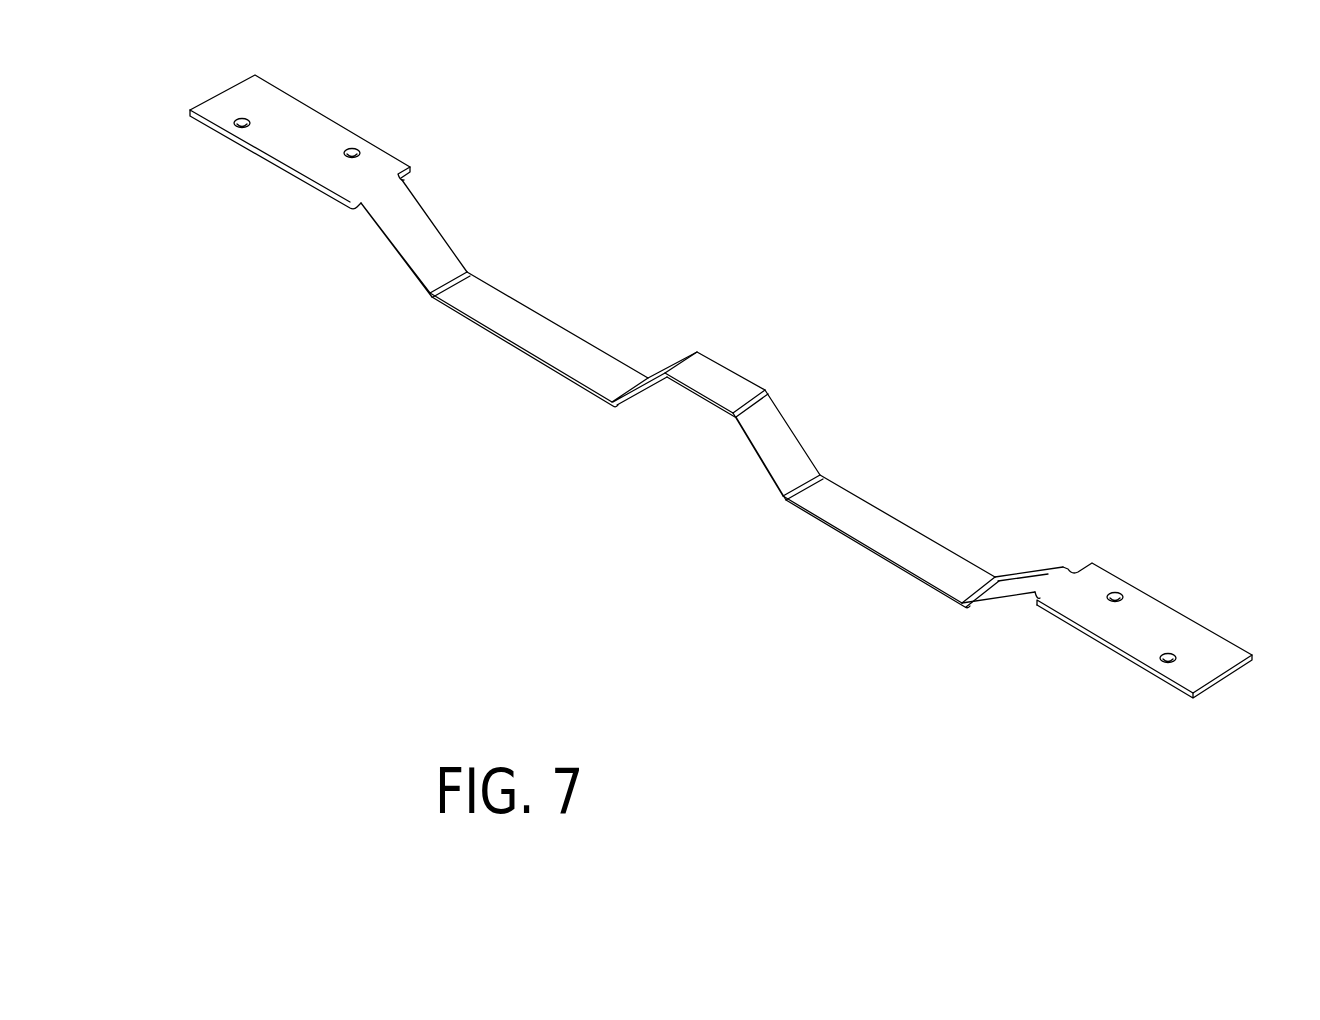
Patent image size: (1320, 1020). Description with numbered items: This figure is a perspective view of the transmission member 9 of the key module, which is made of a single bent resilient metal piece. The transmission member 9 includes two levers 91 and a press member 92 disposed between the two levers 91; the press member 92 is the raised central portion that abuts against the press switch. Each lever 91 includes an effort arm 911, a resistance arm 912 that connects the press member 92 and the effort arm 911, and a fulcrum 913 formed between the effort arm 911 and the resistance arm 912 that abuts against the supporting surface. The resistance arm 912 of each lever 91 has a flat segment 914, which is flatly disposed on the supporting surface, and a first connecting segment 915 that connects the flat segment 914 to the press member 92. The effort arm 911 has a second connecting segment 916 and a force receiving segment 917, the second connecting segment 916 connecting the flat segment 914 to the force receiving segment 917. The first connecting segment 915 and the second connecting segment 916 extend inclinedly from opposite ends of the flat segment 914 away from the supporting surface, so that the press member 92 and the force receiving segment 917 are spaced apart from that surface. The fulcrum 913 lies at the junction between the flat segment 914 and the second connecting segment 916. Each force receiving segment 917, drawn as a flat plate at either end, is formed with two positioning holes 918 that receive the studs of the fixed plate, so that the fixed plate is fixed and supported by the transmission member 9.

The transmission member 9 is at (770, 323).
The lever 91 is at (509, 407).
The effort arm 911 is at (268, 207).
The resistance arm 912 is at (449, 347).
The fulcrum 913 is at (430, 296).
The flat segment 914 is at (550, 333).
The first connecting segment 915 is at (652, 380).
The second connecting segment 916 is at (427, 235).
The force receiving segment 917 is at (320, 125).
The positioning hole 918 is at (240, 128).
The press member 92 is at (723, 388).